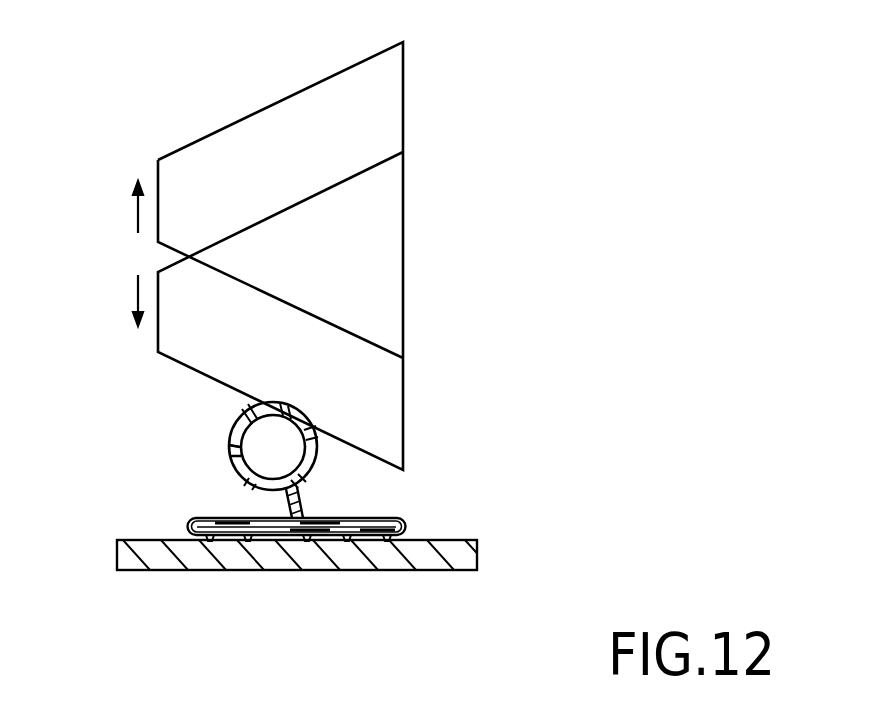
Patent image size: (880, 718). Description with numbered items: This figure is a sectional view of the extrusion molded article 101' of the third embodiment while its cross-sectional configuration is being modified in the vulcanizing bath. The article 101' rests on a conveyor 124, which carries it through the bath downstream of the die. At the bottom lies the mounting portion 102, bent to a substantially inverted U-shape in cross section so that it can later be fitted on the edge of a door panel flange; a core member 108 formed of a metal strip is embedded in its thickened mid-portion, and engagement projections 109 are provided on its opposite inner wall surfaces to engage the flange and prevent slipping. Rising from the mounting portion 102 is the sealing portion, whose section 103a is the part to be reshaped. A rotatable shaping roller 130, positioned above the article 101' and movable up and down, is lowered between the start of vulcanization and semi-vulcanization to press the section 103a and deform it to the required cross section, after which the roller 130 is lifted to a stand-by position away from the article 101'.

The shaping roller 130 is at (387, 433).
The extrusion molded article 101' is at (181, 441).
The section of the sealing portion 103a is at (240, 458).
The core member 108 is at (318, 528).
The mounting portion 102 is at (383, 517).
The engagement projections 109 is at (248, 542).
The conveyor 124 is at (163, 558).